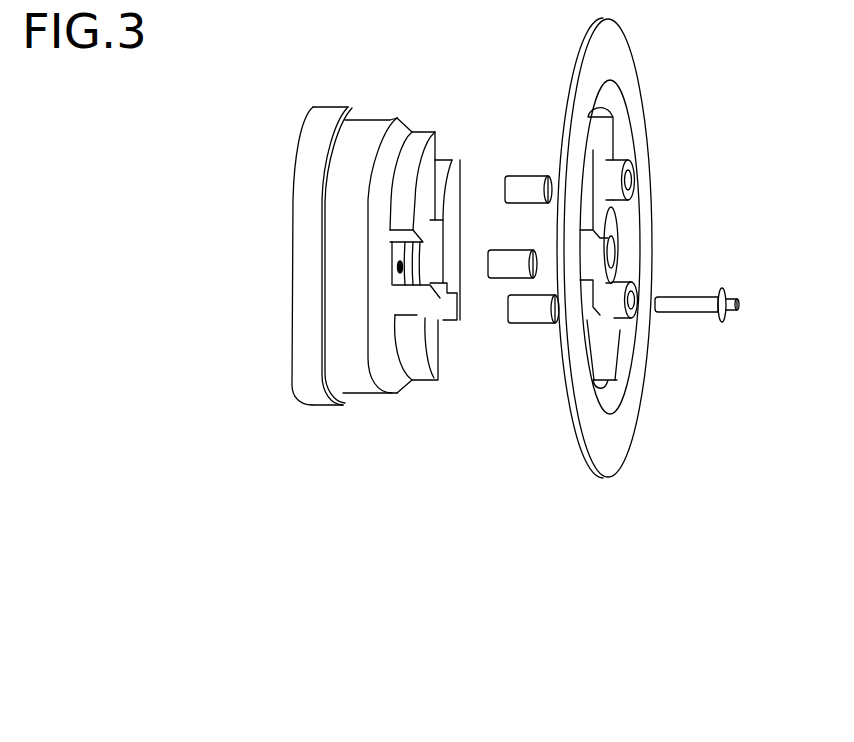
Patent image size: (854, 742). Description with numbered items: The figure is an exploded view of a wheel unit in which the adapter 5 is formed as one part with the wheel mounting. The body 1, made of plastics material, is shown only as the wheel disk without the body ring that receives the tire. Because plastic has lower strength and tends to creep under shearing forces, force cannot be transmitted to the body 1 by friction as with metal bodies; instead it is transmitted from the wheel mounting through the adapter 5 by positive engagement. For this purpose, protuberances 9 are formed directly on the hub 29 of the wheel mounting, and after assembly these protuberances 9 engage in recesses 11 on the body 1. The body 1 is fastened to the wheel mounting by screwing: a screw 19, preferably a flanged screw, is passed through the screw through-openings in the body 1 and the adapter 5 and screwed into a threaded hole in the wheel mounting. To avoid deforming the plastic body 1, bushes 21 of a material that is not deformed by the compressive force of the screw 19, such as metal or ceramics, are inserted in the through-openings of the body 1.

The body 1 is at (617, 57).
The adapter 5 is at (410, 158).
The protuberances 9 is at (433, 357).
The recesses 11 is at (603, 160).
The screw 19 is at (692, 305).
The bushes 21 is at (522, 187).
The hub 29 is at (300, 206).